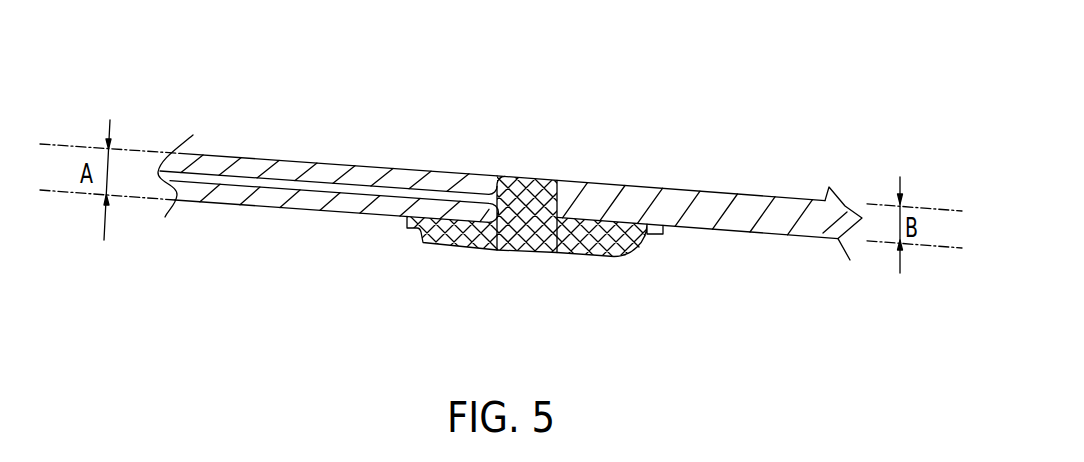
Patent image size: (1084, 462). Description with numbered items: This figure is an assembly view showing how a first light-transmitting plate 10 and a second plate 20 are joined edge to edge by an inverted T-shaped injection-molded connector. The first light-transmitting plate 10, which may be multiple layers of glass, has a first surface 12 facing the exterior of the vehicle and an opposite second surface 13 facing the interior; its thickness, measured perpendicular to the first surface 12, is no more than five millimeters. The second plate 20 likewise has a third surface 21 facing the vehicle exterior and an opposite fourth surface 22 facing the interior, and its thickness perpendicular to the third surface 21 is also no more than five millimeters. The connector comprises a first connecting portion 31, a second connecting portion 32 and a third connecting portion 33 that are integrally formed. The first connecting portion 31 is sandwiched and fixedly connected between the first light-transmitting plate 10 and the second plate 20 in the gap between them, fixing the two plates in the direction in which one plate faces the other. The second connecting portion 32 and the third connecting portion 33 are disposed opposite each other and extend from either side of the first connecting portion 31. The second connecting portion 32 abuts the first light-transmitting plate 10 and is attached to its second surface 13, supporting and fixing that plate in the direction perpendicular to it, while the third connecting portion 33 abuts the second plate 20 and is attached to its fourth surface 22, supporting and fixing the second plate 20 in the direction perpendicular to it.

The first light-transmitting plate 10 is at (298, 164).
The first surface 12 is at (234, 157).
The second surface 13 is at (233, 203).
The second plate 20 is at (716, 201).
The third surface 21 is at (788, 198).
The fourth surface 22 is at (785, 235).
The first connecting portion 31 is at (525, 178).
The second connecting portion 32 is at (455, 245).
The third connecting portion 33 is at (607, 255).